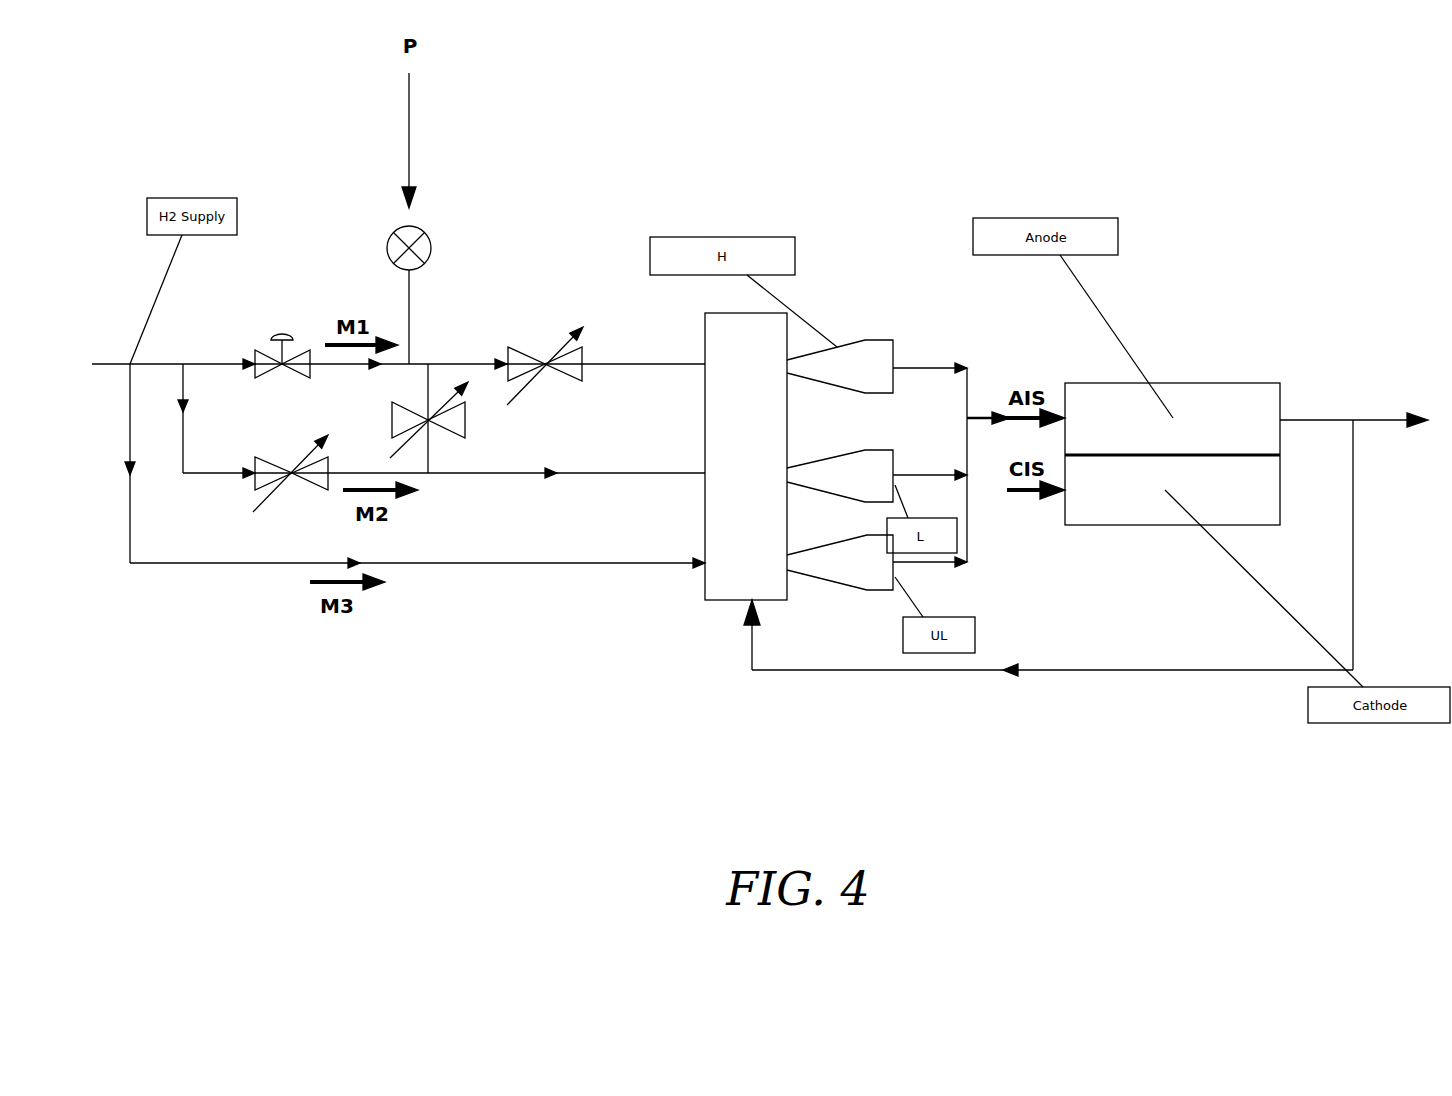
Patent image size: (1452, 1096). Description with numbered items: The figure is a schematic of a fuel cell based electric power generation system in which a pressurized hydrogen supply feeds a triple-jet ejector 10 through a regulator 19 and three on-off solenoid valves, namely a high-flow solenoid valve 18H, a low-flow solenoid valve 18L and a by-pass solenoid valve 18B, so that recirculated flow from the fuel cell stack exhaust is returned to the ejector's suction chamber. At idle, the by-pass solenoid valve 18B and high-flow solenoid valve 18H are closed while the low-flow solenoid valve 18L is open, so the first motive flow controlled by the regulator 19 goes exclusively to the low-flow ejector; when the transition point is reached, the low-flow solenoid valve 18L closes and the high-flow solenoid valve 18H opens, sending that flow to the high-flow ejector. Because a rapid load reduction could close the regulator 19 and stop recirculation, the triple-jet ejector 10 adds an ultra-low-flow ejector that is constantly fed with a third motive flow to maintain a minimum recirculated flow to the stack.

The triple-jet ejector 10 is at (825, 271).
The regulator 19 is at (283, 334).
The by-pass solenoid valve 18B is at (292, 473).
The low-flow solenoid valve 18L is at (465, 420).
The high-flow solenoid valve 18H is at (544, 364).